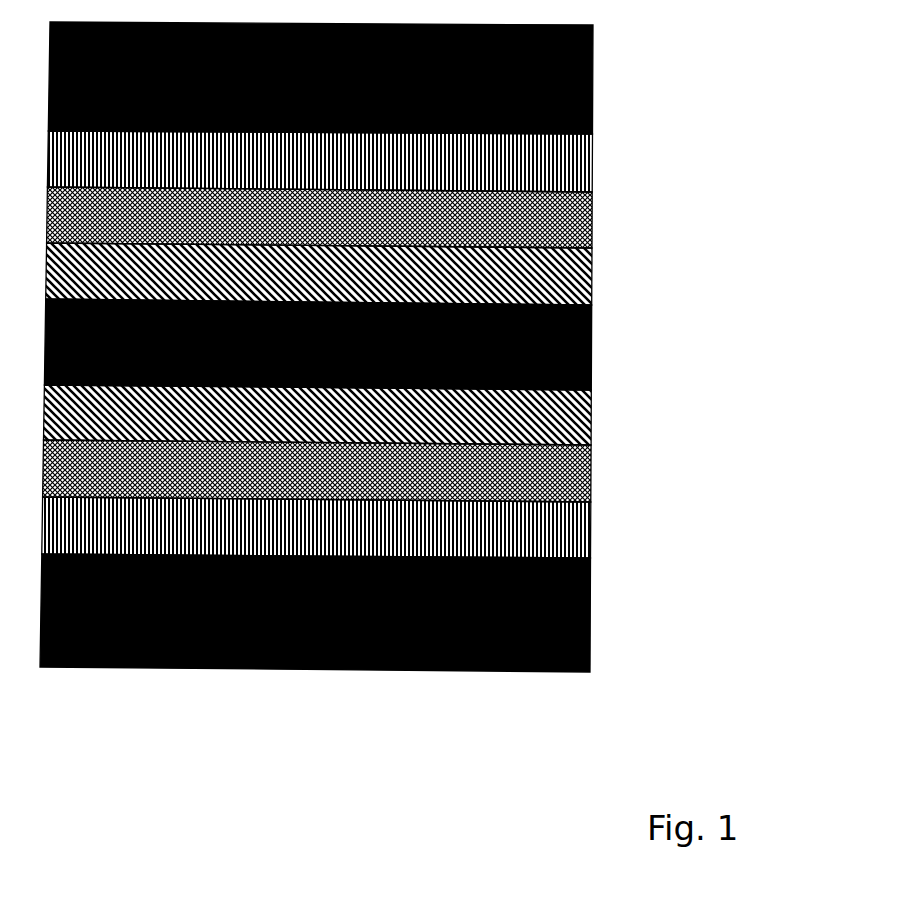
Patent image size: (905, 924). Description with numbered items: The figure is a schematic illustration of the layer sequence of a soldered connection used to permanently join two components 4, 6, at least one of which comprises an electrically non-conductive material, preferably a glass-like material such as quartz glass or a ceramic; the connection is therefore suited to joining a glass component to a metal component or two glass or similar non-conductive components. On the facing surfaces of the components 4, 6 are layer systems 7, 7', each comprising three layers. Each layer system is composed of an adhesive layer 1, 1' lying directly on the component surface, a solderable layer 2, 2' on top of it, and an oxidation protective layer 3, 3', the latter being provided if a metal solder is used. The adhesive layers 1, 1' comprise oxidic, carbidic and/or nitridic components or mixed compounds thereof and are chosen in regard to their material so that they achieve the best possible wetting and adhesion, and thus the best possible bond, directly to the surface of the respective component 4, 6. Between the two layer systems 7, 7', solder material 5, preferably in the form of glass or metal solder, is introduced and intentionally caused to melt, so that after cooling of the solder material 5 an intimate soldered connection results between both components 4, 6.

The adhesive layer 1 is at (383, 160).
The solderable layer 2 is at (383, 216).
The oxidation protective layer 3 is at (383, 274).
The component 4 is at (593, 72).
The solder material 5 is at (593, 343).
The component 6 is at (590, 612).
The layer system 7 is at (437, 218).
The adhesive layer 1' is at (385, 525).
The solderable layer 2' is at (386, 469).
The oxidation protective layer 3' is at (387, 412).
The layer system 7' is at (439, 471).